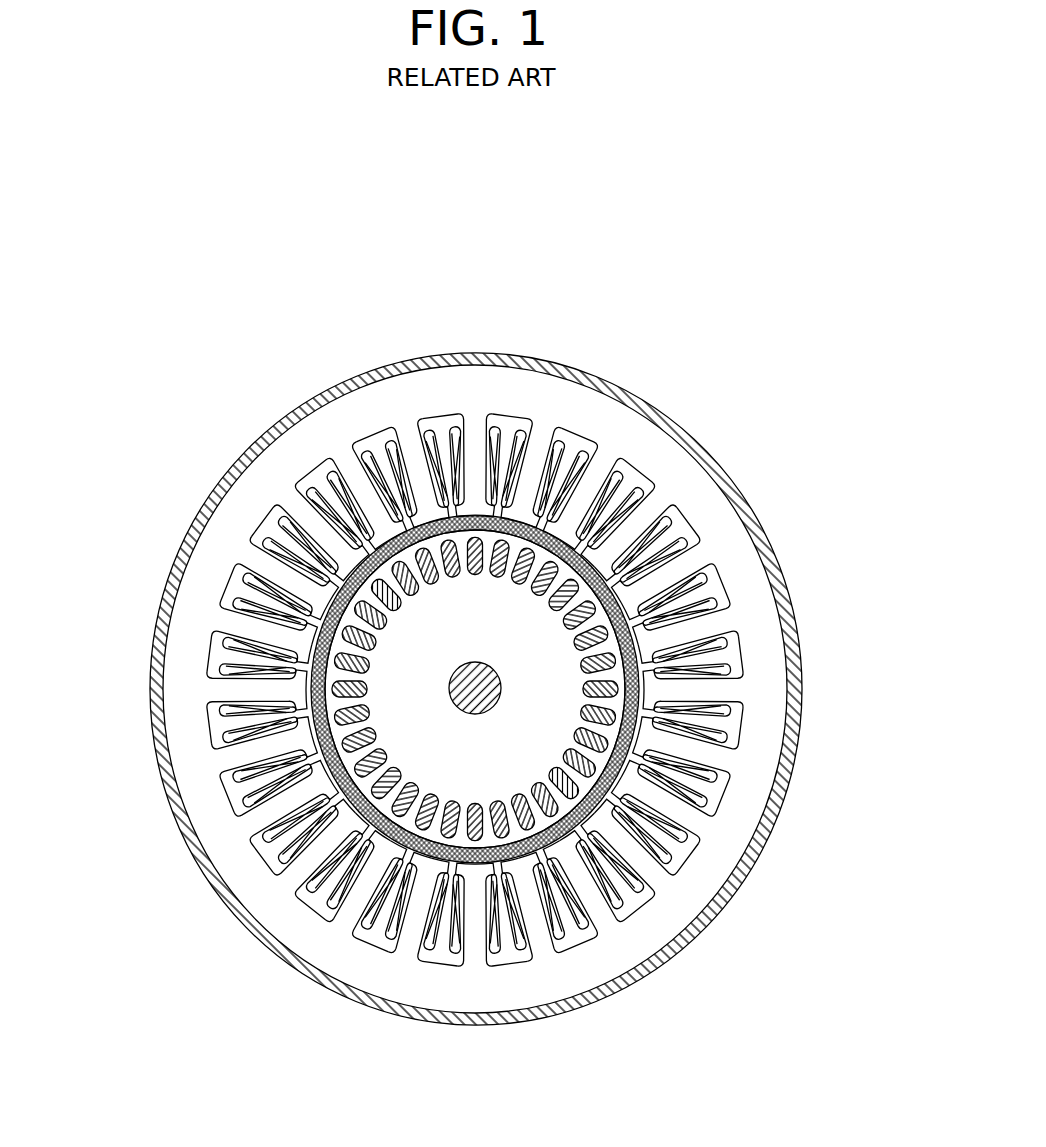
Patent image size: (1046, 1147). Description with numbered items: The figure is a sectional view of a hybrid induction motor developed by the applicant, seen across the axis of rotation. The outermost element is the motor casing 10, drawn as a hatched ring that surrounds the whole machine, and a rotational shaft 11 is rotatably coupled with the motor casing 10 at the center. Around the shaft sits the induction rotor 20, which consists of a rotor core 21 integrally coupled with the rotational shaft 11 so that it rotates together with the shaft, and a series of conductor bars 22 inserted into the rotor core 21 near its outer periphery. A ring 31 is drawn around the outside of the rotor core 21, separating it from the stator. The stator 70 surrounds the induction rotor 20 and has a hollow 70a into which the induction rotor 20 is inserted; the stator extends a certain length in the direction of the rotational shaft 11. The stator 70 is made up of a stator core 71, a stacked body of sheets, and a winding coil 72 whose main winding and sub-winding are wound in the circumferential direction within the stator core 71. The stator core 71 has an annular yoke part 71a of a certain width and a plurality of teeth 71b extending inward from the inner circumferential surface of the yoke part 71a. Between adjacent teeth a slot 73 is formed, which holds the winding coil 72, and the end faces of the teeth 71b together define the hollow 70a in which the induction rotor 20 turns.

The motor casing 10 is at (268, 410).
The rotational shaft 11 is at (458, 705).
The induction rotor 20 is at (78, 607).
The rotor core 21 is at (407, 691).
The conductor bar 22 is at (330, 647).
The rotor end ring 31 is at (335, 725).
The stator 70 is at (505, 224).
The hollow 70a is at (700, 752).
The stator core 71 is at (720, 281).
The yoke part 71a is at (643, 440).
The teeth 71b is at (584, 482).
The winding coil 72 is at (522, 420).
The slot 73 is at (729, 727).